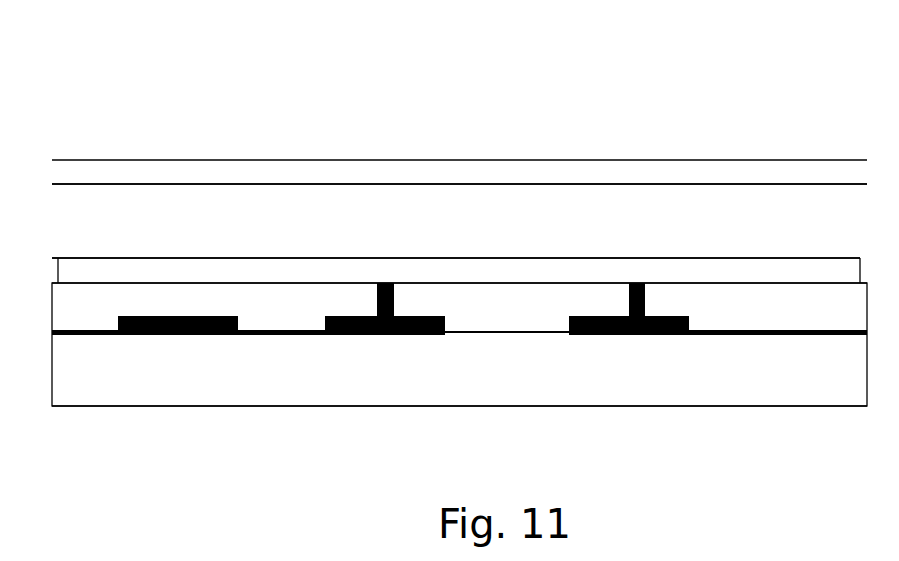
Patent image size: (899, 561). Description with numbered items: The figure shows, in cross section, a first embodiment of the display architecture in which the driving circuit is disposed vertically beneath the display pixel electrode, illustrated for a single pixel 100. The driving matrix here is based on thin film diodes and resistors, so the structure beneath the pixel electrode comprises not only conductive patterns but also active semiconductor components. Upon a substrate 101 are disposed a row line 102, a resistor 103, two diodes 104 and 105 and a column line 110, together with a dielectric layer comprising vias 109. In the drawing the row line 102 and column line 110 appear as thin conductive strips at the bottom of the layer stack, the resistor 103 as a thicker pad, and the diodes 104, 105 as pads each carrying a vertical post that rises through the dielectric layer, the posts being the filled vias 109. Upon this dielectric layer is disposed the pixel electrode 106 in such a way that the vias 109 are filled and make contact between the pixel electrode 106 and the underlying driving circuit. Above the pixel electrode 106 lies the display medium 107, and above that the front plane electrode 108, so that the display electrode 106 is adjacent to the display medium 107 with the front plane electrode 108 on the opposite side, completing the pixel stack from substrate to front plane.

The pixel 100 is at (148, 428).
The substrate 101 is at (222, 397).
The row line 102 is at (82, 333).
The resistor 103 is at (213, 339).
The diode 104 is at (385, 338).
The diode 105 is at (623, 338).
The pixel electrode 106 is at (118, 267).
The display medium 107 is at (222, 217).
The front plane electrode 108 is at (384, 167).
The vias 109 is at (628, 284).
The column line 110 is at (785, 339).